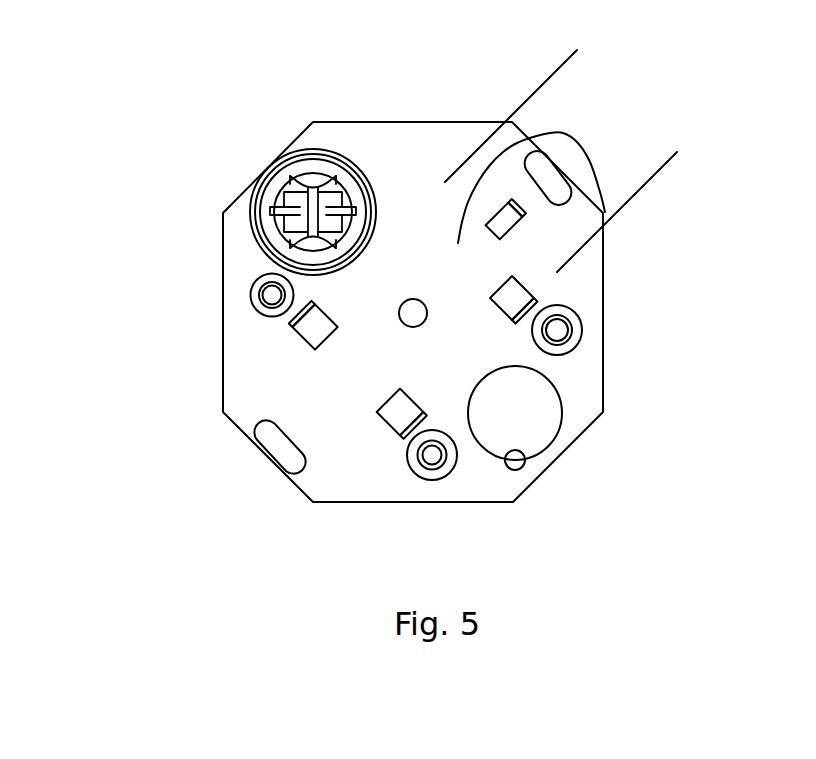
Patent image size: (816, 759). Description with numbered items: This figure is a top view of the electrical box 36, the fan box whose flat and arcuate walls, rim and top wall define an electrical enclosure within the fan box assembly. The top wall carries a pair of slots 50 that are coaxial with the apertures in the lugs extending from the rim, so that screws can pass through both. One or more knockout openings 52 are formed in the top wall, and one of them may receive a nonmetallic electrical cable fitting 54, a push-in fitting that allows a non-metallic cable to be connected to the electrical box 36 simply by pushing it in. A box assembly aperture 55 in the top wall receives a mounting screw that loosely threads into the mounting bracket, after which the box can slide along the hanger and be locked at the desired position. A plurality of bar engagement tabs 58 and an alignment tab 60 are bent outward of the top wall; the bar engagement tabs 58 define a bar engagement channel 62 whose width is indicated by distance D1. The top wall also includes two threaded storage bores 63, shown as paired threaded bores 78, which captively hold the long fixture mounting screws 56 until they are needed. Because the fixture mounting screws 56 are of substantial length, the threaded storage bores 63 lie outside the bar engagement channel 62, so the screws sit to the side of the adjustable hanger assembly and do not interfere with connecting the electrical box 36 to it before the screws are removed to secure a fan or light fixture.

The electrical box 36 is at (136, 120).
The slot 50 is at (277, 443).
The knockout opening 52 is at (503, 425).
The nonmetallic electrical cable fitting 54 is at (293, 160).
The box assembly aperture 55 is at (406, 326).
The fixture mounting screw 56 is at (270, 295).
The bar engagement tab 58 is at (292, 325).
The alignment tab 60 is at (522, 218).
The bar engagement channel 62 is at (540, 137).
The threaded storage bore 63 is at (442, 462).
The paired threaded bores 78 is at (432, 457).
The distance D1 is at (508, 37).